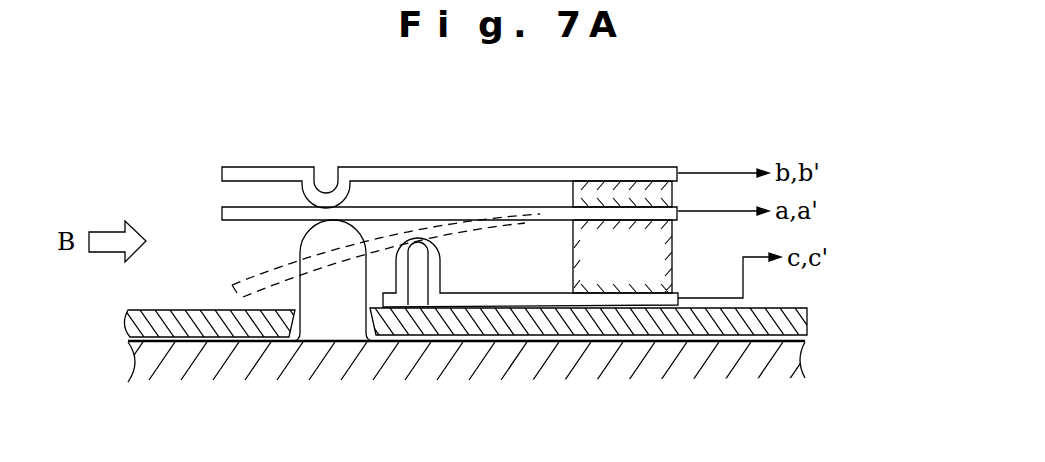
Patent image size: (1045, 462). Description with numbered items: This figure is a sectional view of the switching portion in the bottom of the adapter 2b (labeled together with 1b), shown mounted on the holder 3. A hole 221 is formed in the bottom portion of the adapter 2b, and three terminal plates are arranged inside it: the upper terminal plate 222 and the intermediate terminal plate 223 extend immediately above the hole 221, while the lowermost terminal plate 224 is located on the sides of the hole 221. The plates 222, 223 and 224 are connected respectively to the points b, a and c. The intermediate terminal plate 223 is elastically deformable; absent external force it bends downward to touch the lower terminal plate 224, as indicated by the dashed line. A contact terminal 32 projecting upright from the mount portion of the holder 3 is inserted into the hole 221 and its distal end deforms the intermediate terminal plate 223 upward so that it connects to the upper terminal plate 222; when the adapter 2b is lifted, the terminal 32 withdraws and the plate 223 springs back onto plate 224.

The upper terminal plate 222 is at (449, 171).
The intermediate terminal plate 223 is at (223, 211).
The lower terminal plate 224 is at (508, 294).
The hole 221 is at (298, 330).
The contact terminal 32 is at (298, 239).
The adapter 2b is at (521, 320).
The hatched plate 2b 1b is at (807, 319).
The holder 3 is at (803, 358).